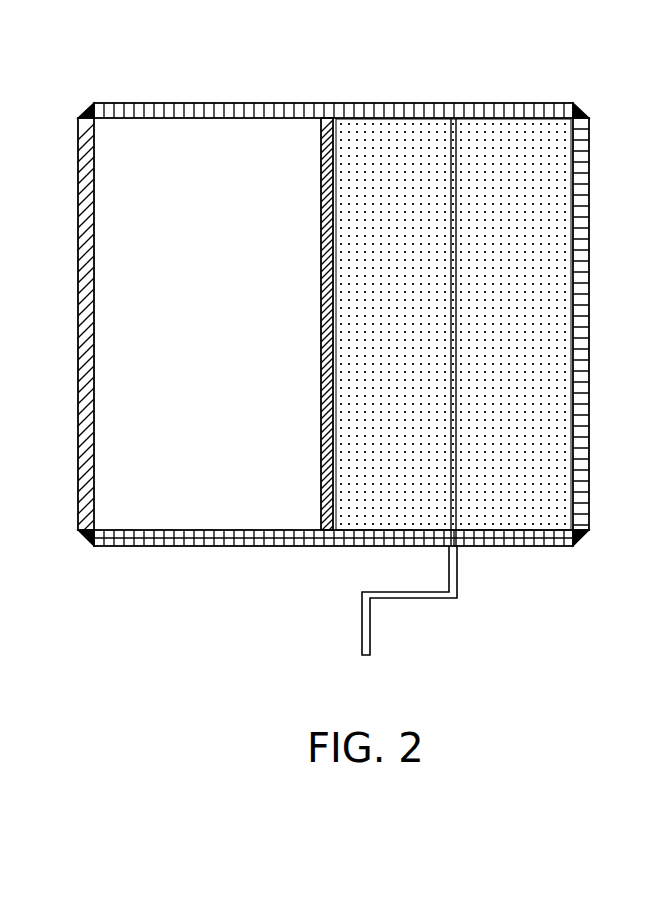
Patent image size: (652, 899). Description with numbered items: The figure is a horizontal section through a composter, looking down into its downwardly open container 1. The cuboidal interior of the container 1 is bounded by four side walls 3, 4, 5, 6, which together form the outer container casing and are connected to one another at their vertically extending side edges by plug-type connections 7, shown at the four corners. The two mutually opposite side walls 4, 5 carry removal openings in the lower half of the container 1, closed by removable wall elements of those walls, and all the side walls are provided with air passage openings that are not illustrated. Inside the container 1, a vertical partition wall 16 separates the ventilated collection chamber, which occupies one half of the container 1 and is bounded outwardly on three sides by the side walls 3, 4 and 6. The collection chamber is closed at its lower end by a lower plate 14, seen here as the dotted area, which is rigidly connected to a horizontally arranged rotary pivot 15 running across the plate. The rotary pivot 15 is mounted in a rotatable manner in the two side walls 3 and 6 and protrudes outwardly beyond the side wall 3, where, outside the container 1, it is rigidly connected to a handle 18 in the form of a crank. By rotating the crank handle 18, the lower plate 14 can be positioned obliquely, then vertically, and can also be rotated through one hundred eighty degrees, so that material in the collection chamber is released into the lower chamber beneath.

The container 1 is at (306, 70).
The side wall 3 is at (158, 538).
The side wall 4 is at (580, 317).
The side wall 5 is at (80, 281).
The side wall 6 is at (204, 113).
The plug-type connection 7 is at (90, 111).
The lower plate 14 is at (553, 474).
The rotary pivot 15 is at (452, 133).
The partition wall 16 is at (322, 260).
The handle 18 is at (362, 630).